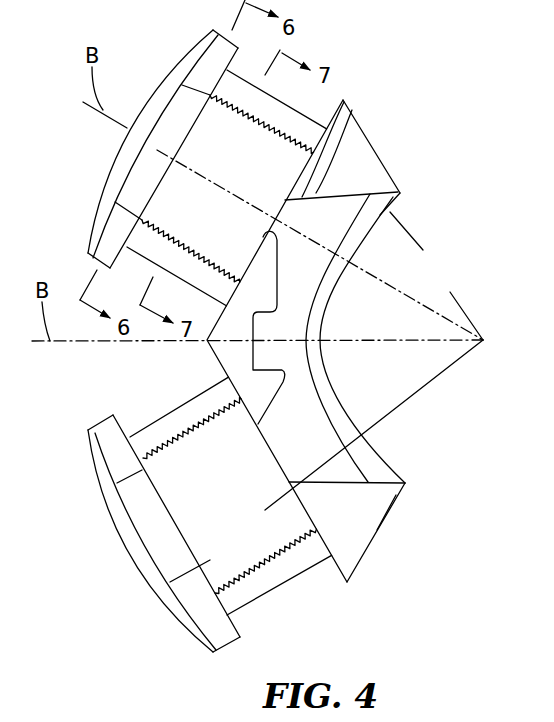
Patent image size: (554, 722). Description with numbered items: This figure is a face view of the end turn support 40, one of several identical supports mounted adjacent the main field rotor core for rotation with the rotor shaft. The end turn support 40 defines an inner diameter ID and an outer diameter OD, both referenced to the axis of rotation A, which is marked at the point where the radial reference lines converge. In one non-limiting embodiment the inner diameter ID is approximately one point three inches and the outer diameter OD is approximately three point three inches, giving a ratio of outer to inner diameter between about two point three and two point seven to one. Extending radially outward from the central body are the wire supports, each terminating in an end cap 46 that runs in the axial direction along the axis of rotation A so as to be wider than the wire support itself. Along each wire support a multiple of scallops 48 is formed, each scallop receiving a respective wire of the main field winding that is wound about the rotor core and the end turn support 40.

The end turn support 40 is at (388, 85).
The end cap 46 is at (185, 53).
The scallops 48 is at (263, 110).
The axis of rotation A is at (483, 340).
The inner diameter ID is at (456, 302).
The outer diameter OD is at (355, 438).